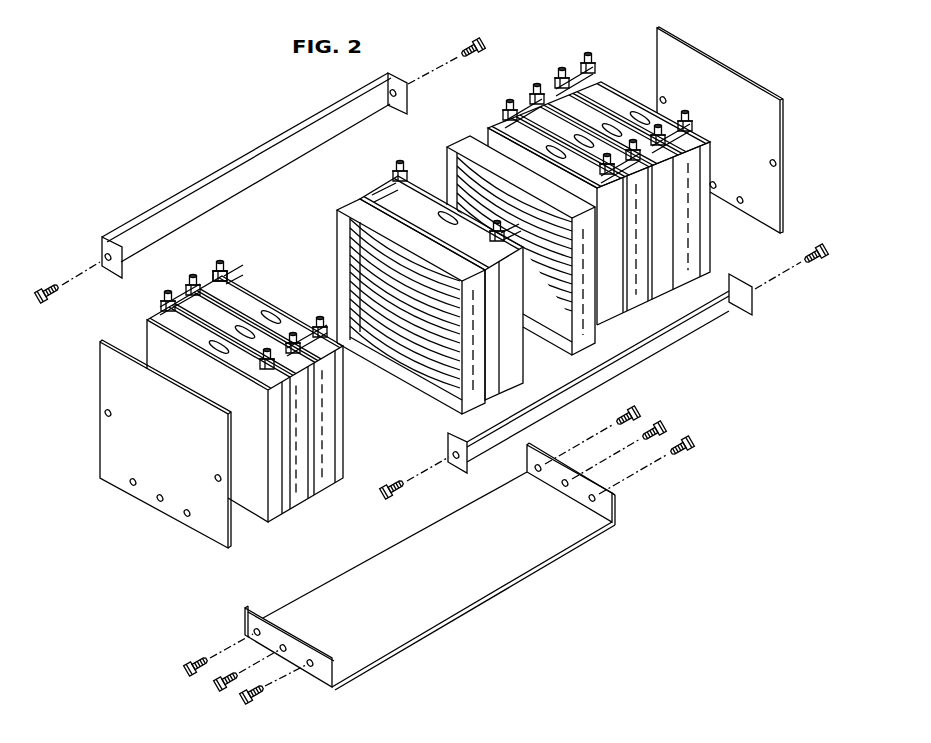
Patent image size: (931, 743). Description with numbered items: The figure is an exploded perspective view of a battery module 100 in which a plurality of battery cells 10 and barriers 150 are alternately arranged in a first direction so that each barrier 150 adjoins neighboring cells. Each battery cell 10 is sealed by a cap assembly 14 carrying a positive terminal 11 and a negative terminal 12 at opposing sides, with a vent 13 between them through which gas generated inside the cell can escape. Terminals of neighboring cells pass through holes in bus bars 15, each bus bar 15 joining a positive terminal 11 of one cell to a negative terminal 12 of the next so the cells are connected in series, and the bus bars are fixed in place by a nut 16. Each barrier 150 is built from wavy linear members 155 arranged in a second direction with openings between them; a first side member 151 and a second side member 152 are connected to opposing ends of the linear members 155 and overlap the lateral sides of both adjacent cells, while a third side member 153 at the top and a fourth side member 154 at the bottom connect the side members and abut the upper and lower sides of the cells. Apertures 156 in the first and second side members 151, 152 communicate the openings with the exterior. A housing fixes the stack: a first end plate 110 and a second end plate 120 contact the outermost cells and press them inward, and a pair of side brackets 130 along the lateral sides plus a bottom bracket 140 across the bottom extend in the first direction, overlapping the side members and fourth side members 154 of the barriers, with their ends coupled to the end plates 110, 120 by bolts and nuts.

The battery module 100 is at (100, 140).
The battery cell 10 is at (271, 372).
The positive terminal 11 is at (220, 262).
The negative terminal 12 is at (318, 322).
The vent 13 is at (262, 320).
The cap assembly 14 is at (247, 292).
The bus bar 15 is at (180, 302).
The nut 16 is at (214, 273).
The first end plate 110 is at (220, 524).
The second end plate 120 is at (789, 192).
The side bracket 130 is at (103, 243).
The bottom bracket 140 is at (341, 665).
The barrier 150 is at (436, 263).
The first side member 151 is at (336, 230).
The second side member 152 is at (478, 370).
The third side member 153 is at (368, 208).
The fourth side member 154 is at (392, 382).
The linear member 155 is at (348, 254).
The aperture 156 is at (474, 318).